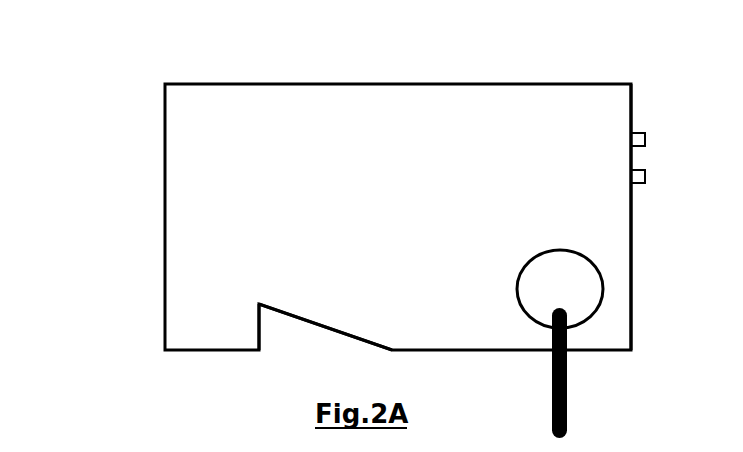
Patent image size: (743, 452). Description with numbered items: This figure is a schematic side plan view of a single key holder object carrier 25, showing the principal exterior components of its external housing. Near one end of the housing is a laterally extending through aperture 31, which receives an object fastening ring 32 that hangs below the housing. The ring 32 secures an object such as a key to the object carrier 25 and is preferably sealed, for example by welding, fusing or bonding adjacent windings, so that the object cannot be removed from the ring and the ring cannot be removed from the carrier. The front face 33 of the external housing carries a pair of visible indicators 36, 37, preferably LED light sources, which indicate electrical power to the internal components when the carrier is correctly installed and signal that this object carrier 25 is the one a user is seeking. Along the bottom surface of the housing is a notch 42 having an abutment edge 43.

The object carrier 25 is at (352, 78).
The through aperture 31 is at (598, 272).
The object fastening ring 32 is at (567, 410).
The front face 33 is at (632, 223).
The visible indicator 36 is at (646, 139).
The visible indicator 37 is at (646, 180).
The notch 42 is at (310, 333).
The abutment edge 43 is at (257, 330).